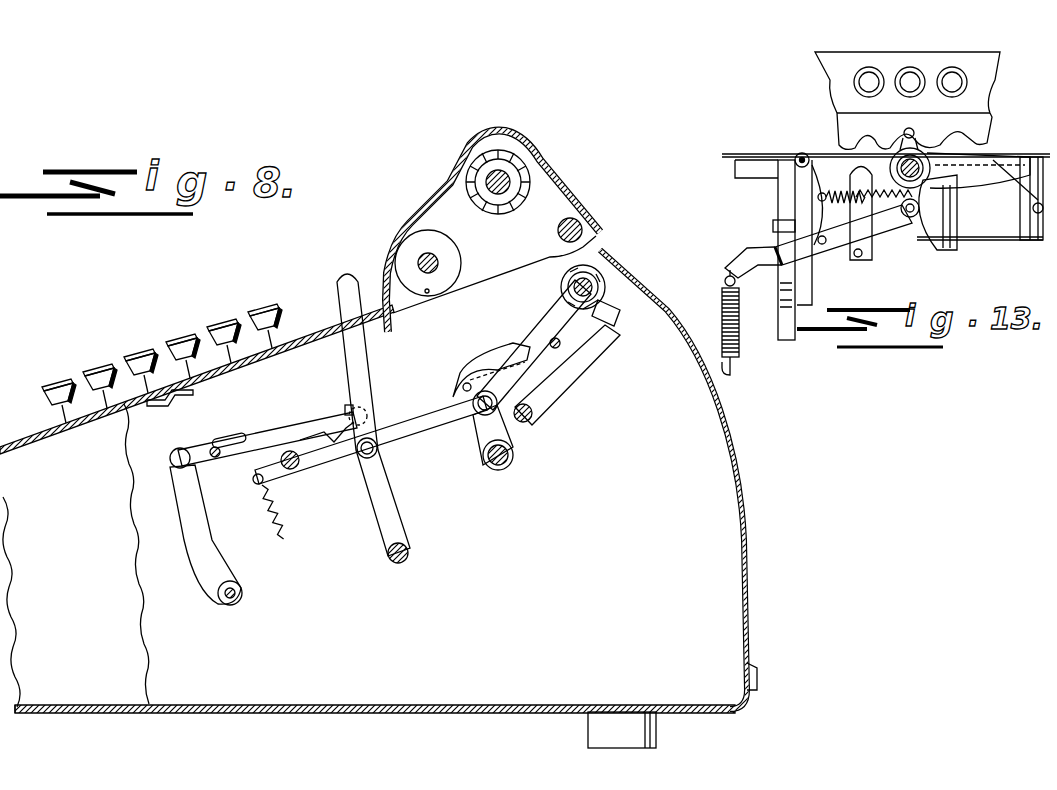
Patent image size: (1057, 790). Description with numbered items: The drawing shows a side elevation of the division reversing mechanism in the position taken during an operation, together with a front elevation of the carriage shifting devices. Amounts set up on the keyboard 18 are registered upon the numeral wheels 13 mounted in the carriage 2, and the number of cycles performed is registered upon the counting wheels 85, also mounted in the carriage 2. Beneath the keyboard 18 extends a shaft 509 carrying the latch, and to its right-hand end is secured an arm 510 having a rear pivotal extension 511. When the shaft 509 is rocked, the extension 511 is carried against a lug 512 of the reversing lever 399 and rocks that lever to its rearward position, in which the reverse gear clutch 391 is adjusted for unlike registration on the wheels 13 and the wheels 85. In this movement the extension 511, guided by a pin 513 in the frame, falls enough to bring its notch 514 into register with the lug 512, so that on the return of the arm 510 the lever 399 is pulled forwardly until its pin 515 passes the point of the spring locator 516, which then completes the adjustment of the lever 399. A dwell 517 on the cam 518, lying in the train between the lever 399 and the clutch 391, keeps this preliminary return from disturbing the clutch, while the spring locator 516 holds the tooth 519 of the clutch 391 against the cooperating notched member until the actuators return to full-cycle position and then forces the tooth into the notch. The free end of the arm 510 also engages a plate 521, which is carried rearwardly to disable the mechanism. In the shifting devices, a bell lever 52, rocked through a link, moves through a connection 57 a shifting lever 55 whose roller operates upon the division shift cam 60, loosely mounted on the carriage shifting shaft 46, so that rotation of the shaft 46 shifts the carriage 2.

In FIG. 8, the carriage 2 is at (530, 158).
In FIG. 13, the carriage 2 is at (977, 62).
In FIG. 8, the numeral wheels 13 is at (407, 250).
In FIG. 13, the numeral wheels 13 is at (912, 72).
In FIG. 8, the keyboard 18 is at (93, 373).
In FIG. 13, the carriage shifting shaft 46 is at (923, 157).
In FIG. 13, the bell lever 52 is at (733, 374).
In FIG. 13, the shifting lever 55 is at (755, 250).
In FIG. 13, the connection 57 is at (740, 337).
In FIG. 13, the division shift cam 60 is at (960, 195).
In FIG. 8, the counting wheels 85 is at (470, 160).
In FIG. 8, the reverse gear clutch 391 is at (612, 312).
In FIG. 8, the reversing lever 399 is at (388, 517).
In FIG. 8, the shaft 509 is at (240, 600).
In FIG. 8, the arm 510 is at (208, 582).
In FIG. 8, the pivotal extension 511 is at (258, 425).
In FIG. 8, the lug 512 is at (350, 410).
In FIG. 8, the pin 513 is at (216, 456).
In FIG. 8, the notch 514 is at (330, 420).
In FIG. 8, the pin 515 is at (372, 425).
In FIG. 8, the spring locator 516 is at (322, 452).
In FIG. 8, the dwell 517 is at (466, 368).
In FIG. 8, the cam 518 is at (496, 348).
In FIG. 8, the tooth 519 is at (595, 272).
In FIG. 8, the plate 521 is at (170, 410).